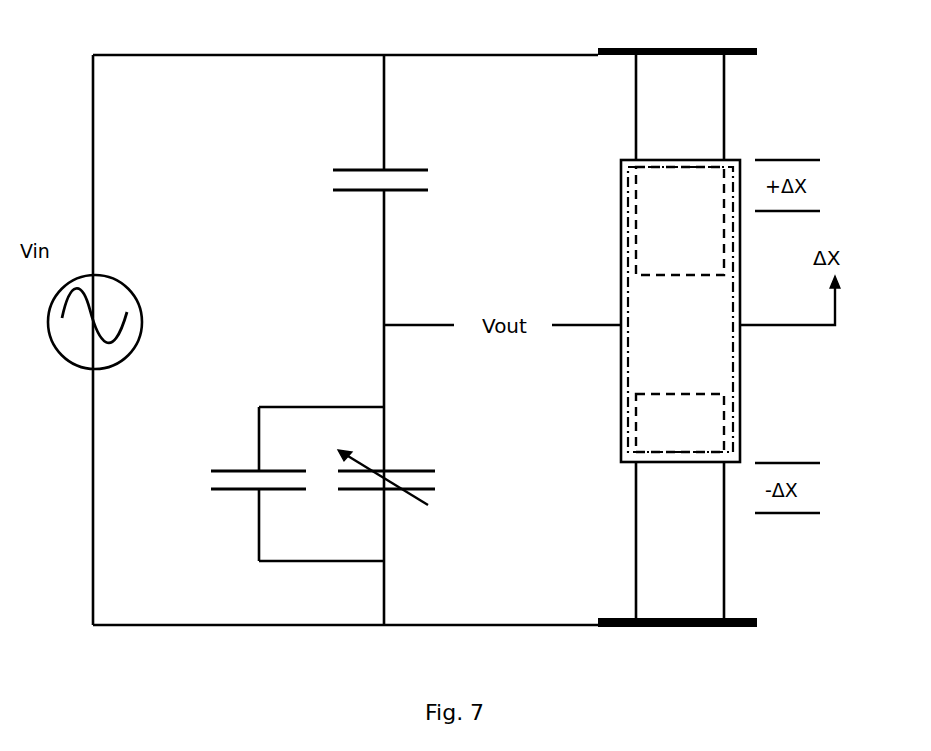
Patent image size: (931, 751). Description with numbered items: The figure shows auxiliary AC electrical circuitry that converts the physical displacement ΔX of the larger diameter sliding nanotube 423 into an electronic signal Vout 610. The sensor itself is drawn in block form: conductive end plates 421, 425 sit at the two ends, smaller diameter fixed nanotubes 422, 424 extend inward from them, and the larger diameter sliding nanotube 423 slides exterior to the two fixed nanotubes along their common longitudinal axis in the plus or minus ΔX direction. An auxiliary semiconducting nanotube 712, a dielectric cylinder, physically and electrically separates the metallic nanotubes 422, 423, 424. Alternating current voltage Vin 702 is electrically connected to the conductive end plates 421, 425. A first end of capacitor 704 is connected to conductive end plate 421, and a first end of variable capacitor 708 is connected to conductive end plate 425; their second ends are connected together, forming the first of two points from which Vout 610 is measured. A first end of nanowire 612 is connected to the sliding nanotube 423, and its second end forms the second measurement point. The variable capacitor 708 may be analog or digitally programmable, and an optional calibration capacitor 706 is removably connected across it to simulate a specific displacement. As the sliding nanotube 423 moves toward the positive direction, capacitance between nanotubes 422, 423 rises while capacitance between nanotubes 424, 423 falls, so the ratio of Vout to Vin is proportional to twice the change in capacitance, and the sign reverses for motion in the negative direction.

The alternating current voltage Vin 702 is at (131, 283).
The capacitor 704 is at (358, 168).
The calibration capacitor 706 is at (212, 468).
The variable capacitor 708 is at (445, 496).
The electronic signal Vout 610 is at (478, 323).
The nanowire 612 is at (573, 330).
The conductive end plate 421 is at (757, 53).
The smaller diameter fixed nanotube 422 is at (726, 120).
The larger diameter sliding nanotube 423 is at (742, 377).
The auxiliary semiconducting nanotube 712 is at (628, 177).
The smaller diameter fixed nanotube 424 is at (726, 520).
The conductive end plate 425 is at (757, 622).